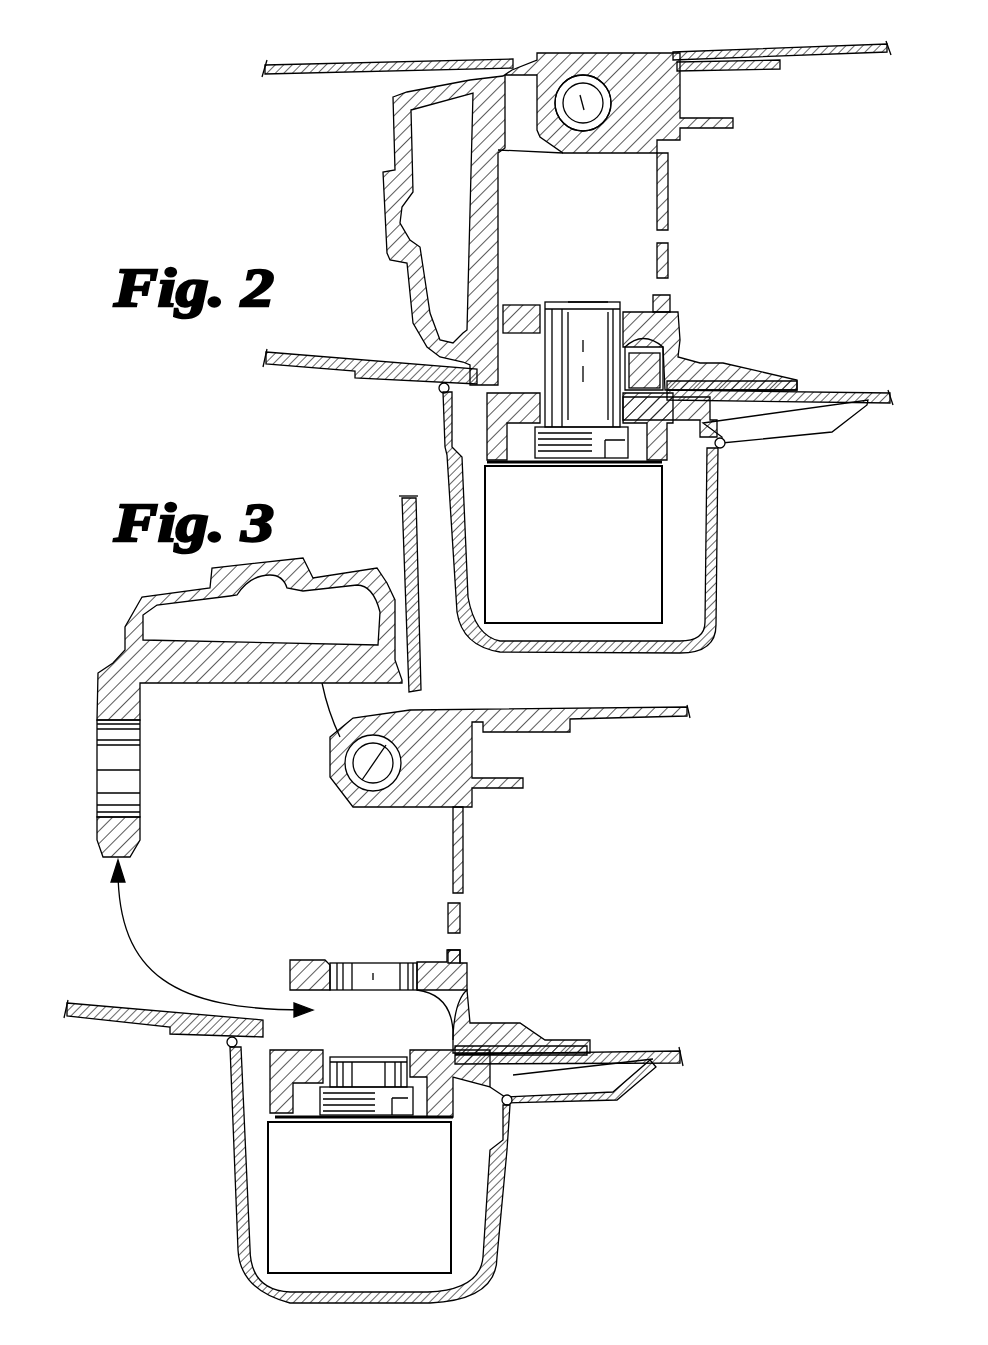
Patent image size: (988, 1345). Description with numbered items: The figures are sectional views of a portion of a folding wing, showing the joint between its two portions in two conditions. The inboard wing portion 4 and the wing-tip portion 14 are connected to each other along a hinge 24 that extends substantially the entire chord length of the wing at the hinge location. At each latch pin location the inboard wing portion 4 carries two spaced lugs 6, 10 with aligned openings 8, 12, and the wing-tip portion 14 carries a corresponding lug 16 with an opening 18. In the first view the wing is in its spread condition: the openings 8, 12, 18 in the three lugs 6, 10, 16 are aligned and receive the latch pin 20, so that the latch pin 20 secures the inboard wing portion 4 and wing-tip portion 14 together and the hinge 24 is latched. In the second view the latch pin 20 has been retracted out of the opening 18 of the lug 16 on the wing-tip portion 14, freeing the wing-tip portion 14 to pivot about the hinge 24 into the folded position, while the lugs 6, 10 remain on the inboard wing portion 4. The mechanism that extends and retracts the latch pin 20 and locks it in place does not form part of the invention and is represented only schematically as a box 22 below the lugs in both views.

In FIG. 2, the inboard wing portion 4 is at (805, 55).
In FIG. 3, the inboard wing portion 4 is at (662, 699).
In FIG. 2, the lug 6 is at (483, 407).
In FIG. 3, the lug 6 is at (466, 1024).
In FIG. 2, the opening 8 is at (571, 301).
In FIG. 3, the opening 8 is at (405, 1057).
In FIG. 2, the lug 10 is at (511, 301).
In FIG. 3, the lug 10 is at (303, 958).
In FIG. 2, the opening 12 is at (594, 336).
In FIG. 3, the opening 12 is at (348, 962).
In FIG. 2, the wing-tip portion 14 is at (290, 57).
In FIG. 3, the wing-tip portion 14 is at (400, 508).
In FIG. 2, the lug 16 is at (652, 345).
In FIG. 3, the lug 16 is at (140, 836).
In FIG. 2, the opening 18 is at (574, 499).
In FIG. 3, the opening 18 is at (137, 753).
In FIG. 2, the latch pin 20 is at (588, 482).
In FIG. 3, the latch pin 20 is at (360, 1057).
In FIG. 2, the box 22 is at (595, 594).
In FIG. 3, the box 22 is at (387, 1200).
In FIG. 2, the hinge 24 is at (584, 98).
In FIG. 3, the hinge 24 is at (418, 710).